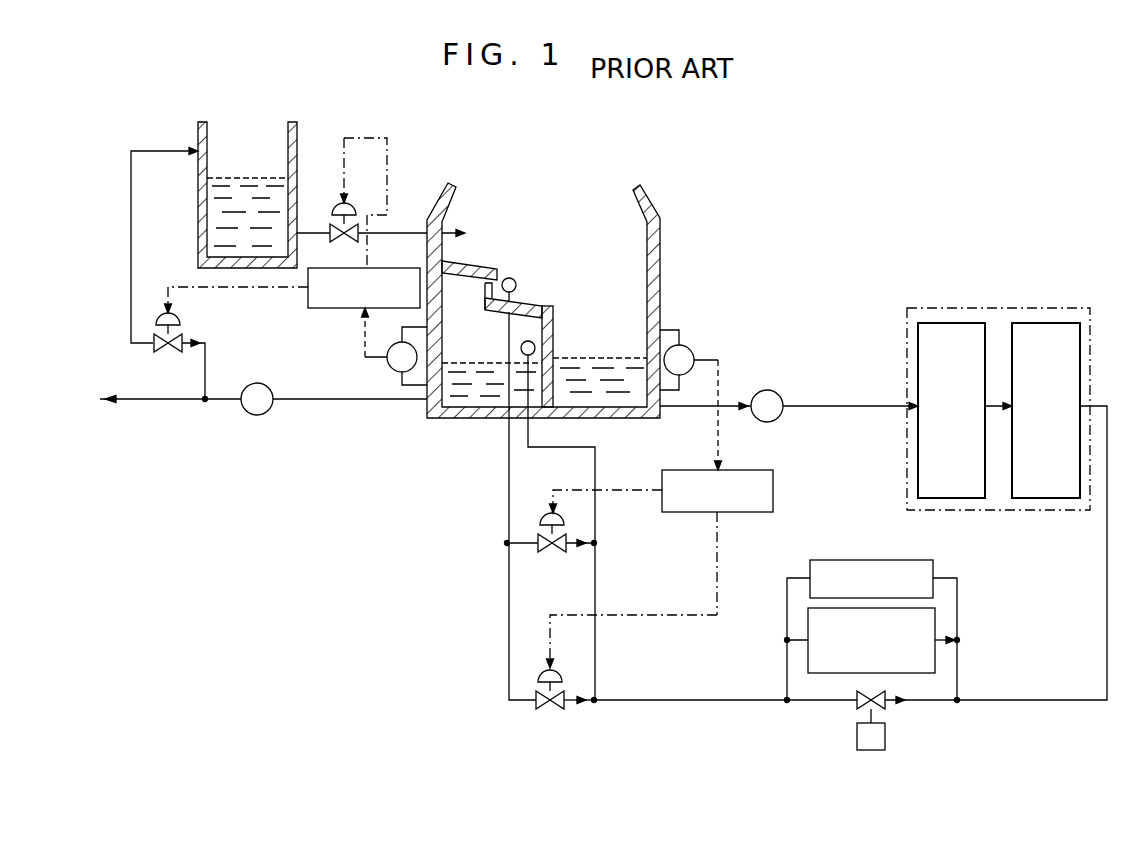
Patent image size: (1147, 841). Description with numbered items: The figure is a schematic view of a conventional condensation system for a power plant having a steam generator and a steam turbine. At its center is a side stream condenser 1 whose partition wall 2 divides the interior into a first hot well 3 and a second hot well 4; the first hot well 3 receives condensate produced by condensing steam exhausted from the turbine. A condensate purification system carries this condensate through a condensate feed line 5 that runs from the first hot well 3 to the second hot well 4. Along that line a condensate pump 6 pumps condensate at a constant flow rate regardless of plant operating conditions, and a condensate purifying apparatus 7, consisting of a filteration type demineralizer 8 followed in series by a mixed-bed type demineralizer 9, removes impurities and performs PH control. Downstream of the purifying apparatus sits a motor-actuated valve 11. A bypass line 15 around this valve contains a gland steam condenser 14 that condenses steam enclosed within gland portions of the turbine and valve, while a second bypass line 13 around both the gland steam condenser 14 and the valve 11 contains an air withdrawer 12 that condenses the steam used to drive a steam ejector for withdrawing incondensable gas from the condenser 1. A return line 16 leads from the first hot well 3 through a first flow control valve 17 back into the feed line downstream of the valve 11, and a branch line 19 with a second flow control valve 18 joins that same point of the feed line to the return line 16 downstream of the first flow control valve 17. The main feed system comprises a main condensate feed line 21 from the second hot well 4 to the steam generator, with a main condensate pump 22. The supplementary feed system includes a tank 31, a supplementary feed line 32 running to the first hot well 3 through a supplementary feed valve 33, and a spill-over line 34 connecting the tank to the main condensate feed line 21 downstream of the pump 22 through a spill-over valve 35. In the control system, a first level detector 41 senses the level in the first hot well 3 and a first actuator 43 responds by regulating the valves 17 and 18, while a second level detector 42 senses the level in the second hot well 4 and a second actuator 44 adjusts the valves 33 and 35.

The side stream condenser 1 is at (656, 205).
The partition wall 2 is at (556, 313).
The first hot well 3 is at (610, 407).
The second hot well 4 is at (461, 407).
The condensate feed line 5 is at (598, 492).
The condensate pump 6 is at (768, 390).
The condensate purifying apparatus 7 is at (1090, 350).
The filteration type demineralizer 8 is at (948, 498).
The mixed-bed type demineralizer 9 is at (1046, 498).
The motor-actuated valve 11 is at (886, 738).
The air withdrawer 12 is at (808, 624).
The second bypass line 13 is at (959, 640).
The gland steam condenser 14 is at (868, 560).
The bypass line 15 is at (935, 578).
The return line 16 is at (506, 490).
The first flow control valve 17 is at (540, 708).
The second flow control valve 18 is at (546, 551).
The branch line 19 is at (594, 541).
The main condensate feed line 21 is at (217, 400).
The main condensate pump 22 is at (257, 383).
The tank 31 is at (298, 130).
The supplementary feed line 32 is at (318, 233).
The supplementary feed valve 33 is at (338, 240).
The spill-over line 34 is at (198, 348).
The spill-over valve 35 is at (170, 350).
The first level detector 41 is at (692, 347).
The second level detector 42 is at (393, 370).
The first actuator 43 is at (776, 490).
The second actuator 44 is at (385, 268).